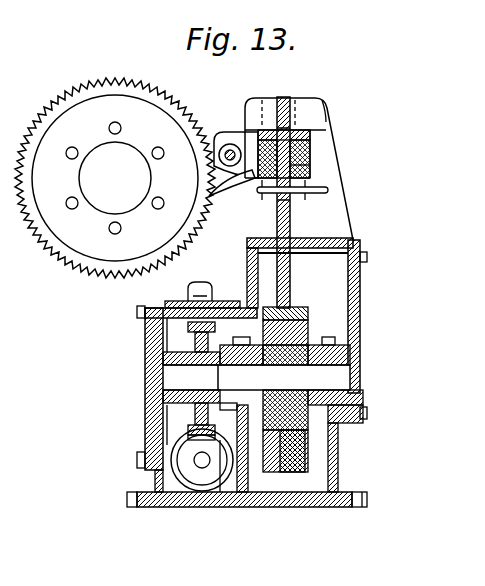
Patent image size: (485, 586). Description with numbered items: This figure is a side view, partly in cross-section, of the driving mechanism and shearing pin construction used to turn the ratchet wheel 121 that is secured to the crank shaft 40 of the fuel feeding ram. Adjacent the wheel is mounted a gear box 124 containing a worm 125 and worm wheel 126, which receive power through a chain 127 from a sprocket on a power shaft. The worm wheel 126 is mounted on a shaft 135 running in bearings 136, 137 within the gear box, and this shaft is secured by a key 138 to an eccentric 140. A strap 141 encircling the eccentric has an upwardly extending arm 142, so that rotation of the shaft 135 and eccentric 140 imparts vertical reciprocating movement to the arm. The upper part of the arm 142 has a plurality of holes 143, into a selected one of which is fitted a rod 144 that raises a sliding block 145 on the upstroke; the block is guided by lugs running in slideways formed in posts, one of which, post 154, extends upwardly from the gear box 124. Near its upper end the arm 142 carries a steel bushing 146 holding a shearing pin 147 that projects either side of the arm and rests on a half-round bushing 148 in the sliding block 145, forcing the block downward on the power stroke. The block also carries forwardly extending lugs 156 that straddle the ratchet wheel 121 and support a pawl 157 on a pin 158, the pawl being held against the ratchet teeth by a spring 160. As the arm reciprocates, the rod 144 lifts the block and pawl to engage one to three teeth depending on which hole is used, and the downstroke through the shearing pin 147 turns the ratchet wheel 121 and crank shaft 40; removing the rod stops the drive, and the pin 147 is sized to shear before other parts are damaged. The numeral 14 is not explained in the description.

The ratchet wheel 121 is at (117, 84).
The crank shaft 40 is at (104, 204).
The lugs 156 is at (213, 140).
The pawl 157 is at (222, 206).
The pin 158 is at (230, 150).
The post 154 is at (252, 110).
The steel bushing 146 is at (318, 120).
The shearing pin 147 is at (308, 134).
The half-round bushing 148 is at (310, 148).
The sliding block 145 is at (312, 157).
The arm 142 is at (288, 98).
The holes 143 is at (310, 178).
The rod 144 is at (330, 190).
The shaft 135 is at (352, 370).
The bearing 136 is at (370, 417).
The key 138 is at (318, 430).
The eccentric 140 is at (278, 472).
The strap 141 is at (301, 475).
The chain 127 is at (145, 386).
The spring 160 is at (232, 215).
The worm wheel 126 is at (190, 426).
The worm 125 is at (185, 482).
The bearing 137 is at (231, 470).
The gear box 124 is at (467, 309).
The frame member 14 is at (478, 465).